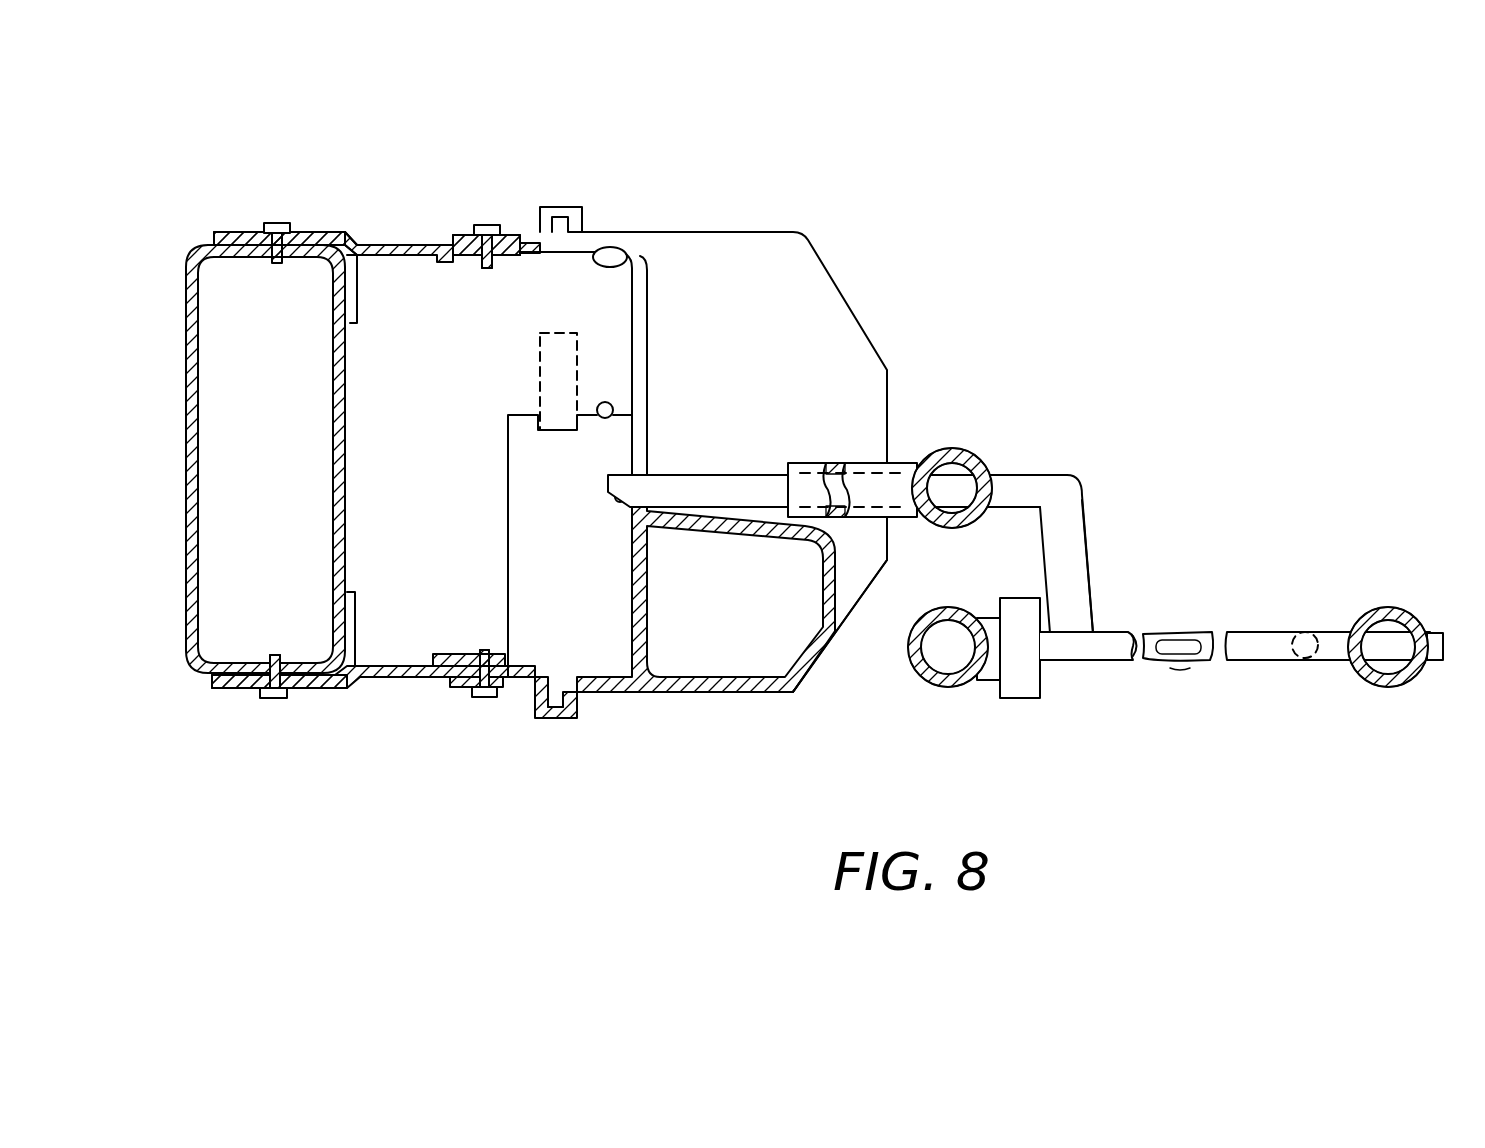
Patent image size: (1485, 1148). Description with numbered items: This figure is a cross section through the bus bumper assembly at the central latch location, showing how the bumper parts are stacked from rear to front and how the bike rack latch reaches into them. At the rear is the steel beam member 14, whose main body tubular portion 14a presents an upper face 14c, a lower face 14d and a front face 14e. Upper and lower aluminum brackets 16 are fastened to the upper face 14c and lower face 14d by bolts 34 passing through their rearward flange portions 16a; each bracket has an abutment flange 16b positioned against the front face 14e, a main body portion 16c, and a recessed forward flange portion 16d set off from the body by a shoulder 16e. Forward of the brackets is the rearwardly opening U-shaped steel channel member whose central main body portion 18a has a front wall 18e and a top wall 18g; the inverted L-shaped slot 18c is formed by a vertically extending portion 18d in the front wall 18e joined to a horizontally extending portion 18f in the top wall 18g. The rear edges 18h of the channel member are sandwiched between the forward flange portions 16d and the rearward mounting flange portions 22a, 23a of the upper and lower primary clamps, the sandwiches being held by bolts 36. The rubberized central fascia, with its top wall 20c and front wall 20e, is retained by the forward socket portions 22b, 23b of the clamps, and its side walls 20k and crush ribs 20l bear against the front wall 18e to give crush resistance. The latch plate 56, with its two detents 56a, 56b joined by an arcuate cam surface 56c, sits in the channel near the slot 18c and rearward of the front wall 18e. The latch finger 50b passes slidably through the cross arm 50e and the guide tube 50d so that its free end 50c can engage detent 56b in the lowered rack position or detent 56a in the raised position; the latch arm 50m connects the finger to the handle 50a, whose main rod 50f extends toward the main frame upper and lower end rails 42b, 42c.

The beam member 14 is at (185, 390).
The main body tubular portion 14a is at (186, 516).
The upper face 14c is at (233, 250).
The lower face 14d is at (225, 690).
The front face 14e is at (346, 497).
The bracket 16 is at (364, 236).
The rearward flange portion 16a is at (232, 231).
The abutment flange 16b is at (358, 298).
The main body portion 16c is at (372, 243).
The recessed forward flange portion 16d is at (500, 278).
The shoulder 16e is at (435, 660).
The central main body portion 18a is at (648, 335).
The slot 18c is at (684, 292).
The vertically extending portion 18d is at (647, 420).
The front wall 18e is at (648, 604).
The horizontally extending portion 18f is at (643, 231).
The top wall 18g is at (520, 264).
The rear edge 18h is at (462, 652).
The top wall 20c is at (735, 231).
The front wall 20e is at (720, 695).
The side wall 20k is at (640, 258).
The crush rib 20l is at (805, 375).
The rearward mounting flange portion 22a is at (505, 232).
The forward socket portion 22b is at (555, 206).
The rearward mounting flange portion 23a is at (527, 700).
The forward socket portion 23b is at (582, 718).
The bolt 34 is at (262, 222).
The bolt 36 is at (478, 700).
The upper end rail 42b is at (1362, 615).
The lower end rail 42c is at (944, 688).
The handle 50a is at (1088, 663).
The latch finger 50b is at (727, 474).
The free end 50c is at (606, 489).
The guide tube 50d is at (828, 466).
The cross arm 50e is at (953, 448).
The main rod 50f is at (1120, 632).
The latch arm 50m is at (1092, 527).
The latch plate 56 is at (505, 463).
The detent 56a is at (578, 395).
The detent 56b is at (616, 510).
The arcuate cam surface 56c is at (600, 418).